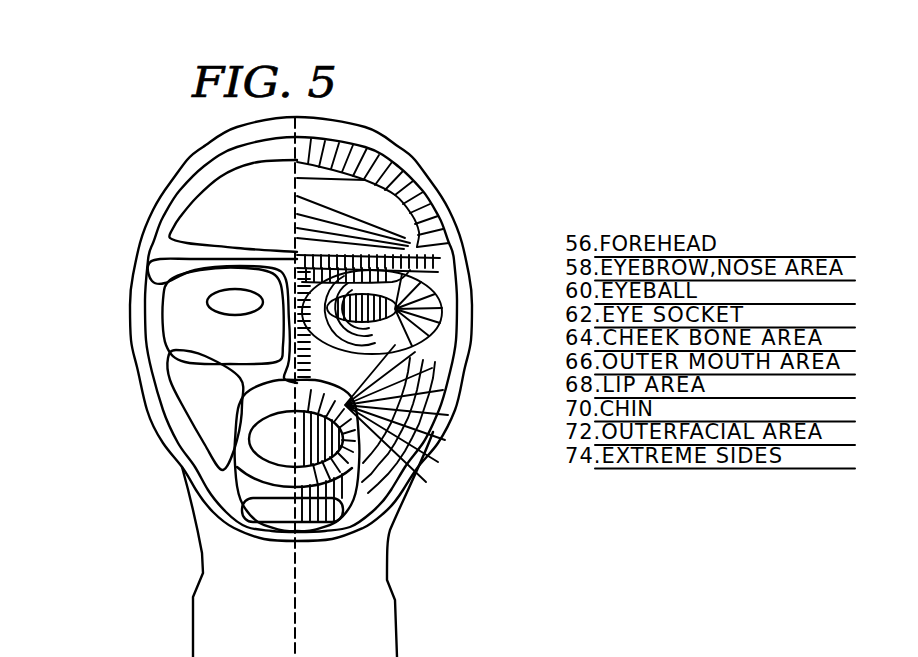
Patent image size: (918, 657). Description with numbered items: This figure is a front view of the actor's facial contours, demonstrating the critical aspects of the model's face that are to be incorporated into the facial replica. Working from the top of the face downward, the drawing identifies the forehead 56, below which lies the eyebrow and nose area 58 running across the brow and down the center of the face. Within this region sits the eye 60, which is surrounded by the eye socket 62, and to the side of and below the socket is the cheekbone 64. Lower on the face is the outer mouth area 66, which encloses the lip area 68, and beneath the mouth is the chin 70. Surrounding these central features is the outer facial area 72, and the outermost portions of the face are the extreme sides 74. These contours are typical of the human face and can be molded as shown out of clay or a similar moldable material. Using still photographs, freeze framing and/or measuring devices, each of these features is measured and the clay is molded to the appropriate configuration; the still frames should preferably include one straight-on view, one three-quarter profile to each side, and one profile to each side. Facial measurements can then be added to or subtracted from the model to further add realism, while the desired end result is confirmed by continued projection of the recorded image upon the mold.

The forehead 56 is at (215, 198).
The eyebrow and nose area 58 is at (163, 257).
The eye 60 is at (212, 302).
The eye socket 62 is at (190, 330).
The cheekbone 64 is at (250, 412).
The outer mouth area 66 is at (195, 452).
The lip area 68 is at (260, 452).
The chin 70 is at (258, 535).
The outer facial area 72 is at (182, 465).
The extreme sides 74 is at (143, 365).